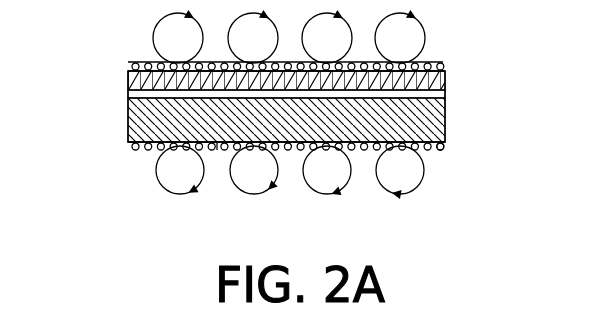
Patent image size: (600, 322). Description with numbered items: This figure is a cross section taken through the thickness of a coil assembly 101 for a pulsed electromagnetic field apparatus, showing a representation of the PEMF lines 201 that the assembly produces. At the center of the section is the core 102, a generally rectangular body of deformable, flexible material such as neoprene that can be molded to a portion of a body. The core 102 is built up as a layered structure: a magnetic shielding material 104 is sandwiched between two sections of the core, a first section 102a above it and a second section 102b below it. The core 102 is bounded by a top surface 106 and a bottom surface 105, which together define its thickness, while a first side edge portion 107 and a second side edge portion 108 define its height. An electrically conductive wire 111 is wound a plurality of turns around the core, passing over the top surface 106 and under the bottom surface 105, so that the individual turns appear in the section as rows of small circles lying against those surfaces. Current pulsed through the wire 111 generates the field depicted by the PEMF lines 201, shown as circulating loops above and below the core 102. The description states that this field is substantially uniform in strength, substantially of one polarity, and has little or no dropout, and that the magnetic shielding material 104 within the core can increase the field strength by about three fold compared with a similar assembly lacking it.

The coil assembly 101 is at (140, 152).
The core 102 is at (128, 122).
The first section of the core 102a is at (445, 69).
The second section of the core 102b is at (445, 105).
The magnetic shielding material 104 is at (445, 92).
The bottom surface 105 is at (443, 150).
The top surface 106 is at (433, 61).
The first side edge portion 107 is at (445, 133).
The second side edge portion 108 is at (128, 80).
The electrically conductive wire 111 is at (217, 150).
The PEMF lines 201 is at (153, 39).